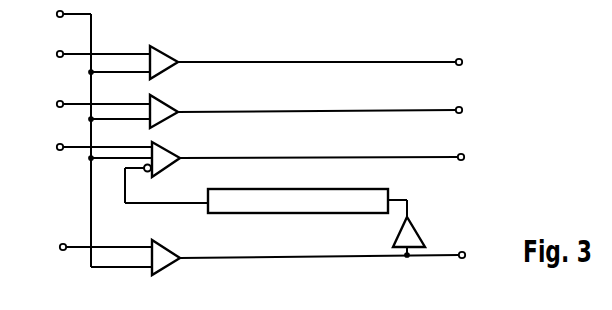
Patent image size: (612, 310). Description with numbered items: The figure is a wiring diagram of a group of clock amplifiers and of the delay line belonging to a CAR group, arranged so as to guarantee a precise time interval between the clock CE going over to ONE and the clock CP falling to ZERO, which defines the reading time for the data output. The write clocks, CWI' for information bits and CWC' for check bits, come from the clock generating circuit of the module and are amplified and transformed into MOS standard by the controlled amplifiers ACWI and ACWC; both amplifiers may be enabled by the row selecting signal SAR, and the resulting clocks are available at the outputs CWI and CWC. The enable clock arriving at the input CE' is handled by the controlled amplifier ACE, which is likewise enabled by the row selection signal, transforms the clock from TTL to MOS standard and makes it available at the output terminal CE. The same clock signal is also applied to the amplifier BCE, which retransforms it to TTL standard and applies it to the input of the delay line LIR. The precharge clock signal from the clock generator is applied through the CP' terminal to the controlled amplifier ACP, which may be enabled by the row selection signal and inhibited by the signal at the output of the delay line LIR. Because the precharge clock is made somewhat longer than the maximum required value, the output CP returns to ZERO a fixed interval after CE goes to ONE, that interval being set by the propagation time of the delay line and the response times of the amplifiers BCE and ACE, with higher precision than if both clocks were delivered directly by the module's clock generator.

The row selecting signal SAR is at (53, 14).
The write clock for information bits CWI' is at (82, 54).
The write clock for check bits CWC' is at (82, 104).
The precharge clock terminal CP' is at (87, 147).
The enable clock input CE' is at (87, 247).
The controlled amplifier ACWI is at (151, 58).
The controlled amplifier ACWC is at (154, 107).
The controlled amplifier ACP is at (148, 170).
The controlled amplifier ACE is at (147, 253).
The delay line LIR is at (307, 213).
The amplifier BCE is at (421, 237).
The output CWI is at (338, 62).
The output CWC is at (341, 110).
The precharge clock output CP is at (335, 158).
The enable clock output terminal CE is at (334, 256).